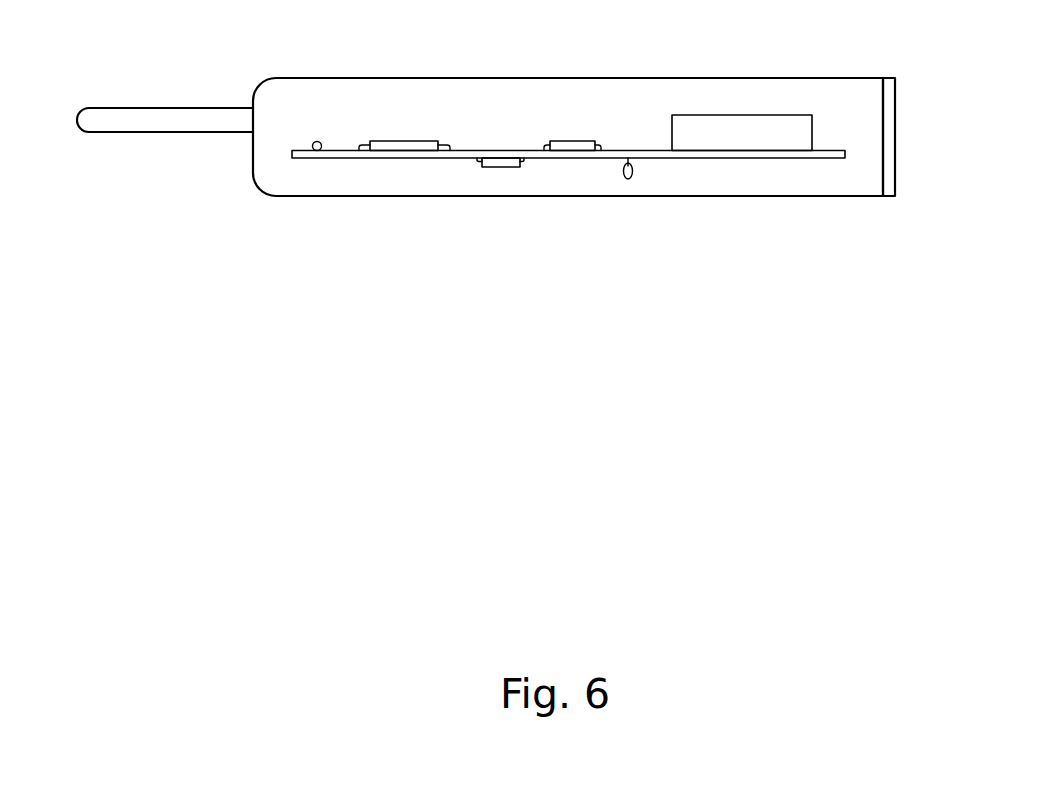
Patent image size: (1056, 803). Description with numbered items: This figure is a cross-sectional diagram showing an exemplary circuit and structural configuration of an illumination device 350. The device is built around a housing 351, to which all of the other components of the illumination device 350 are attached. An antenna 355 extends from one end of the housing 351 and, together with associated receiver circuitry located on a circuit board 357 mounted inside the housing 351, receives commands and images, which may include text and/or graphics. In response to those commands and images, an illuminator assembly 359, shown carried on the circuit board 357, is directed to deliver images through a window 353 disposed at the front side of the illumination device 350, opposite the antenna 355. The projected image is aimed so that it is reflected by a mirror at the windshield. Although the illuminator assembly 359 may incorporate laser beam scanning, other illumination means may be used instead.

The illumination device 350 is at (245, 323).
The housing 351 is at (475, 78).
The window 353 is at (895, 127).
The antenna 355 is at (128, 107).
The circuit board 357 is at (415, 158).
The illuminator assembly 359 is at (748, 115).